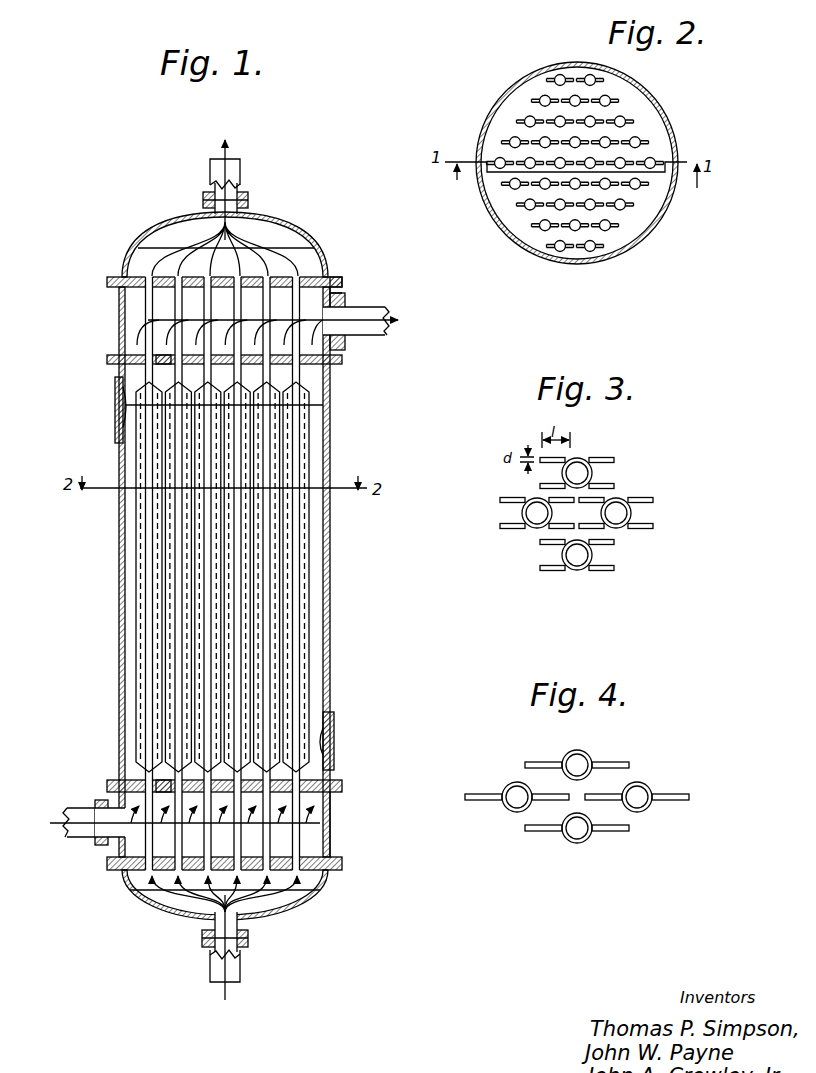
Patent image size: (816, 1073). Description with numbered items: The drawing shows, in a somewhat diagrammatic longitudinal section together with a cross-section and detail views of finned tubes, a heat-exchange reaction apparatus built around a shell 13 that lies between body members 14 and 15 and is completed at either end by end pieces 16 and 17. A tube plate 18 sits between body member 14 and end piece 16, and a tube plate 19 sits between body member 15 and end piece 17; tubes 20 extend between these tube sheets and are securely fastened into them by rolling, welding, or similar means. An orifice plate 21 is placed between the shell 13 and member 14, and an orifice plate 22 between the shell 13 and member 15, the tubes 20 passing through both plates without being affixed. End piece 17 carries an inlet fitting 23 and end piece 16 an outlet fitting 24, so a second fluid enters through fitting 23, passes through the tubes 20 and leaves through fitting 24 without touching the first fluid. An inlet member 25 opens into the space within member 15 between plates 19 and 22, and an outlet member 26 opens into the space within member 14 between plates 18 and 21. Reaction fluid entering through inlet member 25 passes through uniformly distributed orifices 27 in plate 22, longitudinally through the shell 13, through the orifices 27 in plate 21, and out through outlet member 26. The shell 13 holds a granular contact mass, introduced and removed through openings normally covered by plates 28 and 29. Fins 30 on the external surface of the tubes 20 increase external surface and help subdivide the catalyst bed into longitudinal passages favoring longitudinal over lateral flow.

In FIG. 1, the shell 13 is at (331, 590).
In FIG. 2, the shell 13 is at (677, 141).
In FIG. 1, the body member 14 is at (343, 287).
In FIG. 1, the body member 15 is at (330, 832).
In FIG. 1, the end piece 16 is at (286, 222).
In FIG. 1, the end piece 17 is at (290, 913).
In FIG. 1, the tube plate 18 is at (110, 279).
In FIG. 1, the tube plate 19 is at (345, 868).
In FIG. 1, the tubes 20 is at (300, 371).
In FIG. 2, the tubes 20 is at (620, 122).
In FIG. 3, the tubes 20 is at (620, 499).
In FIG. 4, the tubes 20 is at (634, 782).
In FIG. 1, the orifice plate 21 is at (343, 360).
In FIG. 1, the orifice plate 22 is at (343, 785).
In FIG. 1, the inlet fitting 23 is at (213, 963).
In FIG. 1, the outlet fitting 24 is at (235, 175).
In FIG. 1, the inlet member 25 is at (76, 837).
In FIG. 1, the outlet member 26 is at (382, 307).
In FIG. 1, the orifices 27 is at (167, 352).
In FIG. 1, the plate 28 is at (115, 395).
In FIG. 1, the plate 29 is at (335, 740).
In FIG. 1, the fins 30 is at (168, 630).
In FIG. 2, the fins 30 is at (518, 117).
In FIG. 3, the fins 30 is at (643, 528).
In FIG. 4, the fins 30 is at (663, 803).